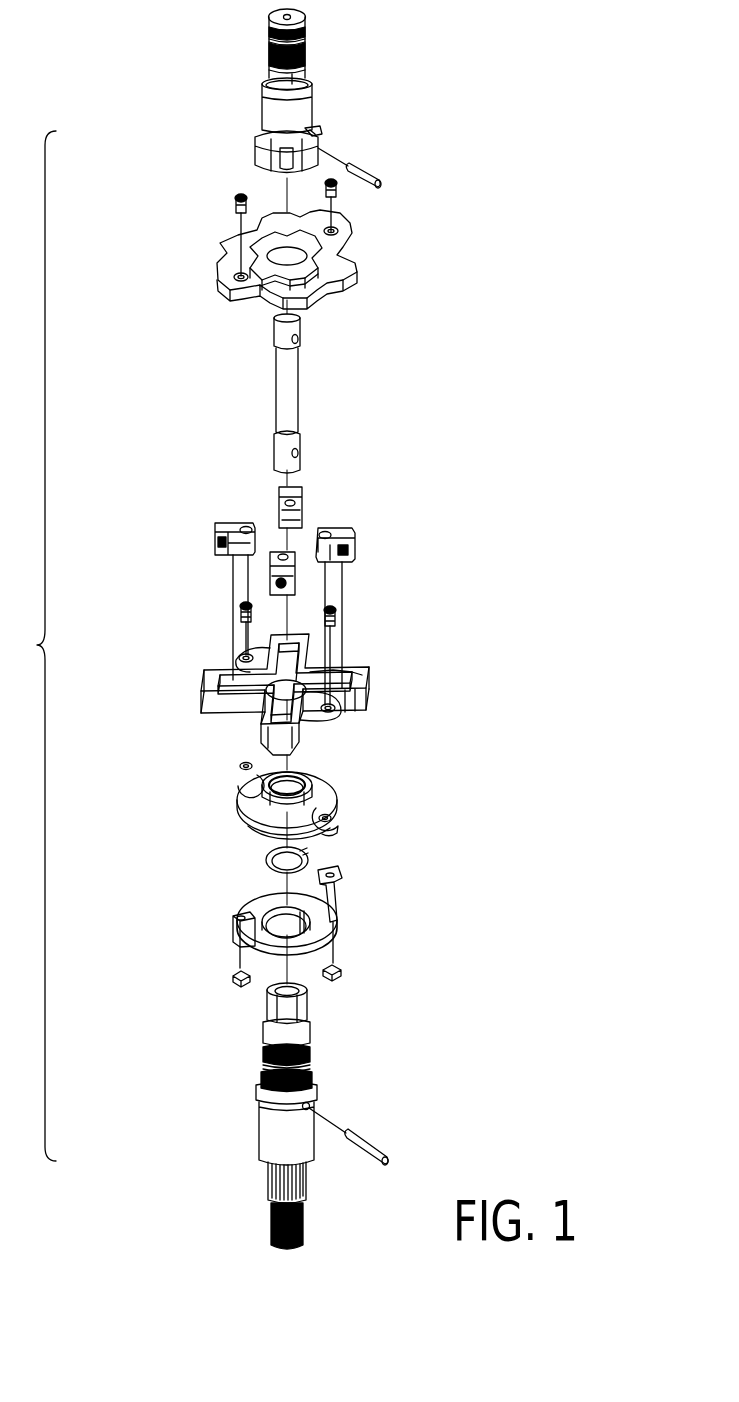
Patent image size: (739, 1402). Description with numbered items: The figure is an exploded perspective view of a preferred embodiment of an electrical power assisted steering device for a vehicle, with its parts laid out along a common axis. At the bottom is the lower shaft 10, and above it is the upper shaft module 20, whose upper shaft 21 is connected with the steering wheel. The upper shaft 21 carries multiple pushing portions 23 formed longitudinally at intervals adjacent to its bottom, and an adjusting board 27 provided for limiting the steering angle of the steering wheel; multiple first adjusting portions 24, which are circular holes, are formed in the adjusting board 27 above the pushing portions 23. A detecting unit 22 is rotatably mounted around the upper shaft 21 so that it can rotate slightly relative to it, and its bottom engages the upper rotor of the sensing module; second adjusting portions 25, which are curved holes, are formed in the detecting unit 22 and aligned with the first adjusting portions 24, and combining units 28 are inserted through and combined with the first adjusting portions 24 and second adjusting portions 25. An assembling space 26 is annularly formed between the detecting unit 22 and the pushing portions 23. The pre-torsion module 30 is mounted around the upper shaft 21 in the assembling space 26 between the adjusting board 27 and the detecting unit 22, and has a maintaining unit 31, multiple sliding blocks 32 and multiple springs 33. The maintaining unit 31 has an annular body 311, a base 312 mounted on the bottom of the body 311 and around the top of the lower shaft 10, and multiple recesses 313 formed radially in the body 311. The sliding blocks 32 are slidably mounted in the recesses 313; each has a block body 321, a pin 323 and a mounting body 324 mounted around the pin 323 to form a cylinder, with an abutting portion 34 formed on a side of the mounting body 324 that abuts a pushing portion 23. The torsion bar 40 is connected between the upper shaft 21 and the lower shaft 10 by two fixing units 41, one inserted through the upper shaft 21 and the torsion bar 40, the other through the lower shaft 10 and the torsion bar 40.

The lower shaft 10 is at (266, 1142).
The upper shaft module 20 is at (231, 143).
The upper shaft 21 is at (307, 107).
The detecting unit 22 is at (337, 916).
The pushing portions 23 is at (268, 161).
The first adjusting portions 24 is at (236, 262).
The second adjusting portions 25 is at (338, 869).
The assembling space 26 is at (263, 905).
The adjusting board 27 is at (346, 269).
The combining units 28 is at (340, 197).
The pre-torsion module 30 is at (198, 657).
The maintaining unit 31 is at (203, 717).
The body 311 is at (361, 716).
The base 312 is at (246, 803).
The recesses 313 is at (349, 680).
The sliding blocks 32 is at (208, 530).
The block body 321 is at (352, 532).
The pin 323 is at (325, 530).
The mounting body 324 is at (258, 530).
The springs 33 is at (356, 551).
The abutting portion 34 is at (323, 569).
The torsion bar 40 is at (293, 389).
The fixing units 41 is at (368, 169).